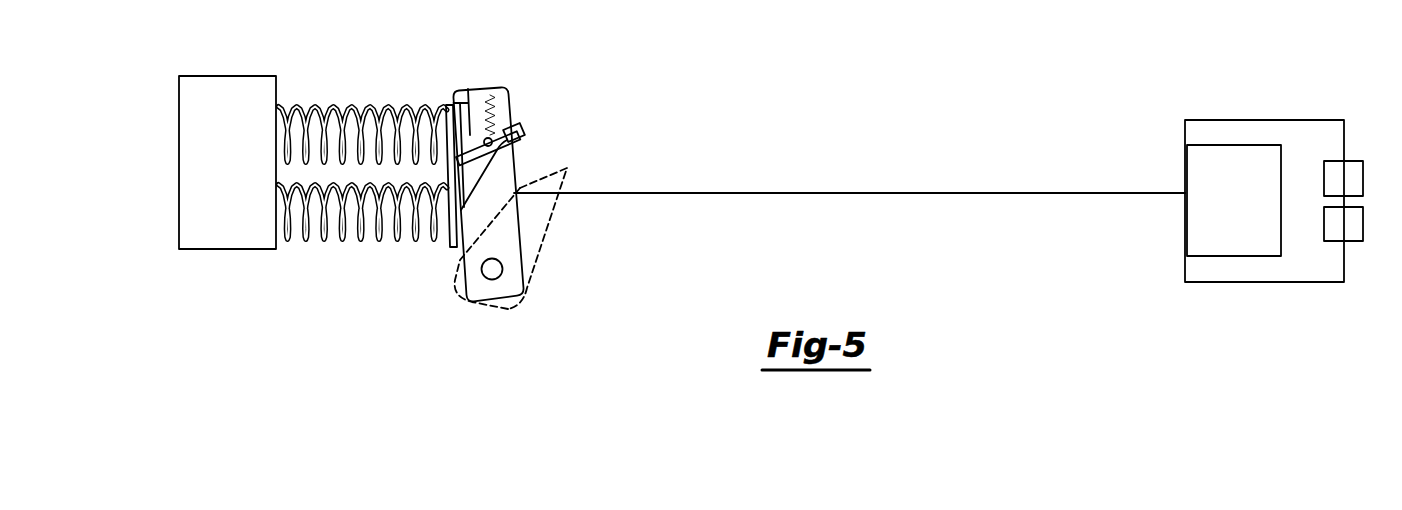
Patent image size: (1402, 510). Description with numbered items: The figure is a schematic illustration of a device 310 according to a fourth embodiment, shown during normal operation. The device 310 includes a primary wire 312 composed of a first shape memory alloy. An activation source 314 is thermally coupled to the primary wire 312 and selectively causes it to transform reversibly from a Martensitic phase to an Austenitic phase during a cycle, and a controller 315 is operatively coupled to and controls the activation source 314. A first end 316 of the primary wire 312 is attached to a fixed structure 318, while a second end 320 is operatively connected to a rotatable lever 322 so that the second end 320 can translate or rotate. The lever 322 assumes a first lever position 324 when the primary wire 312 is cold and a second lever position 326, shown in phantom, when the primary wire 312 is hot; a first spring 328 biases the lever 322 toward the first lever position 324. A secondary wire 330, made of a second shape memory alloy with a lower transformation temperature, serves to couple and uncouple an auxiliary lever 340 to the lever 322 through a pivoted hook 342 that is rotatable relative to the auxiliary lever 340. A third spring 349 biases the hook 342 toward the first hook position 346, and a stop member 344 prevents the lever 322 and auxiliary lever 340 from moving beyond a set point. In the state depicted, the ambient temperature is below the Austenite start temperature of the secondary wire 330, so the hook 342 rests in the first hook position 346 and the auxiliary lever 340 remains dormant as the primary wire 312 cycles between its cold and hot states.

The device 310 is at (955, 100).
The primary wire 312 is at (853, 192).
The activation source 314 is at (1355, 191).
The controller 315 is at (1355, 237).
The first end 316 is at (1184, 193).
The fixed structure 318 is at (239, 167).
The second end 320 is at (518, 192).
The lever 322 is at (558, 213).
The first lever position 324 is at (509, 160).
The second lever position 326 is at (540, 247).
The first spring 328 is at (316, 104).
The secondary wire 330 is at (456, 105).
The auxiliary lever 340 is at (450, 100).
The hook 342 is at (514, 128).
The stop member 344 is at (454, 250).
The first hook position 346 is at (508, 116).
The third spring 349 is at (481, 98).